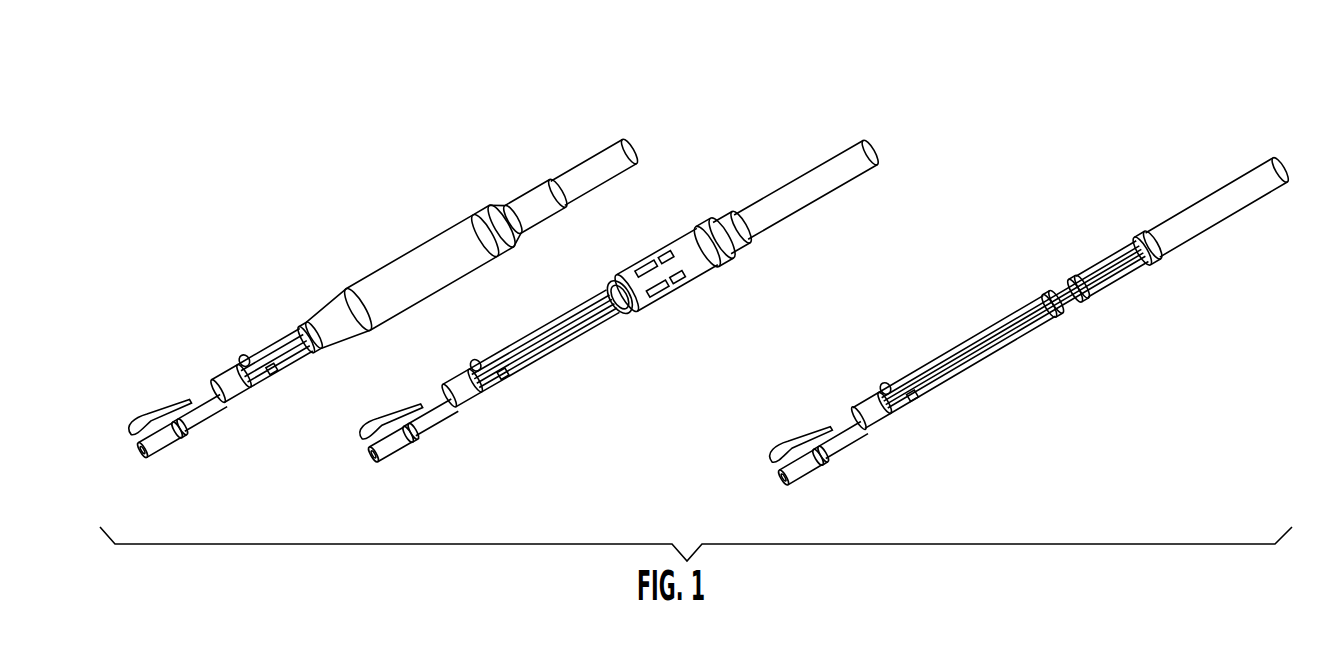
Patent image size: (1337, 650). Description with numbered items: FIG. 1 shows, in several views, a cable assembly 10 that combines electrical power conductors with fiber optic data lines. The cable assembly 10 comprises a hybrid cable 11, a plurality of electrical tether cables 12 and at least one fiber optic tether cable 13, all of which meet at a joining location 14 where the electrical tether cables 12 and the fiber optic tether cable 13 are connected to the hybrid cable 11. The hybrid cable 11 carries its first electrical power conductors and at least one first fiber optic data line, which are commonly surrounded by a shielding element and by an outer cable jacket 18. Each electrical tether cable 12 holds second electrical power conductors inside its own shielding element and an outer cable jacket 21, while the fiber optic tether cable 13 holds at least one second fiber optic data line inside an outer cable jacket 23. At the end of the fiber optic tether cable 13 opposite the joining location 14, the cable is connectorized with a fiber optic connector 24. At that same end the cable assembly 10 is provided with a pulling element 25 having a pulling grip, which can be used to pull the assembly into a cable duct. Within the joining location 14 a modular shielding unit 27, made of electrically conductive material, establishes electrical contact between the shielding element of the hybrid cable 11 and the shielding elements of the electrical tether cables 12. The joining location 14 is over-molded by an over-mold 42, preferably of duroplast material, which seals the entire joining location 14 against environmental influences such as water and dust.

The cable assembly 10 is at (714, 284).
The hybrid cable 11 is at (590, 177).
The electrical tether cables 12 is at (245, 355).
The fiber optic tether cable 13 is at (251, 401).
The joining location 14 is at (402, 243).
The outer cable jacket 18 is at (613, 148).
The outer cable jacket 21 is at (606, 287).
The outer cable jacket 23 is at (263, 405).
The fiber optic connector 24 is at (152, 447).
The pulling element 25 is at (193, 395).
The modular shielding unit 27 is at (690, 222).
The over-mold 42 is at (470, 242).